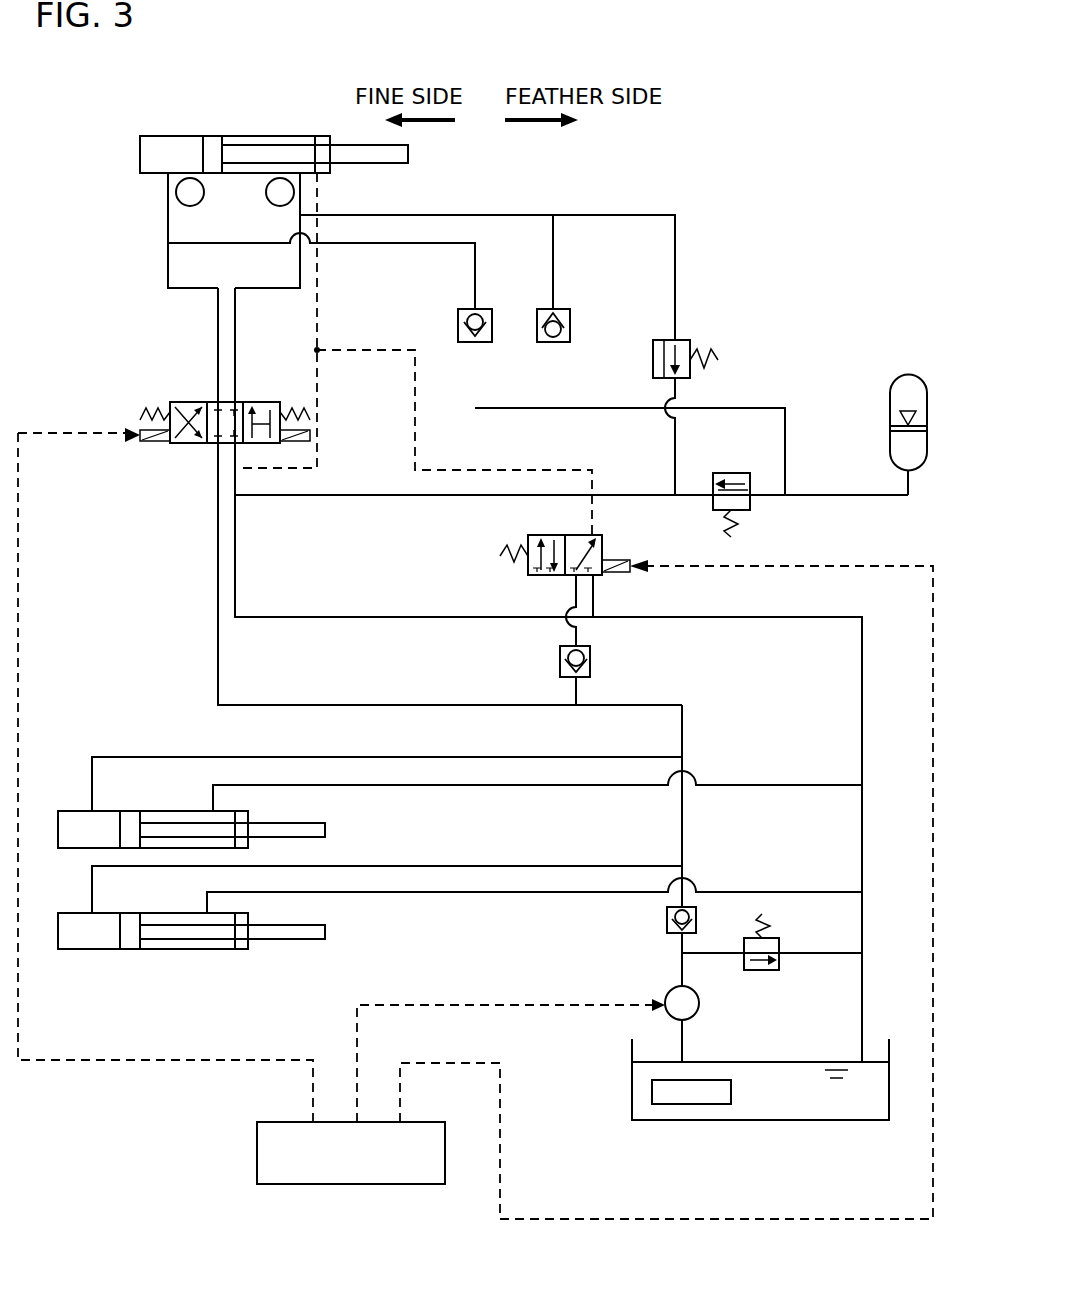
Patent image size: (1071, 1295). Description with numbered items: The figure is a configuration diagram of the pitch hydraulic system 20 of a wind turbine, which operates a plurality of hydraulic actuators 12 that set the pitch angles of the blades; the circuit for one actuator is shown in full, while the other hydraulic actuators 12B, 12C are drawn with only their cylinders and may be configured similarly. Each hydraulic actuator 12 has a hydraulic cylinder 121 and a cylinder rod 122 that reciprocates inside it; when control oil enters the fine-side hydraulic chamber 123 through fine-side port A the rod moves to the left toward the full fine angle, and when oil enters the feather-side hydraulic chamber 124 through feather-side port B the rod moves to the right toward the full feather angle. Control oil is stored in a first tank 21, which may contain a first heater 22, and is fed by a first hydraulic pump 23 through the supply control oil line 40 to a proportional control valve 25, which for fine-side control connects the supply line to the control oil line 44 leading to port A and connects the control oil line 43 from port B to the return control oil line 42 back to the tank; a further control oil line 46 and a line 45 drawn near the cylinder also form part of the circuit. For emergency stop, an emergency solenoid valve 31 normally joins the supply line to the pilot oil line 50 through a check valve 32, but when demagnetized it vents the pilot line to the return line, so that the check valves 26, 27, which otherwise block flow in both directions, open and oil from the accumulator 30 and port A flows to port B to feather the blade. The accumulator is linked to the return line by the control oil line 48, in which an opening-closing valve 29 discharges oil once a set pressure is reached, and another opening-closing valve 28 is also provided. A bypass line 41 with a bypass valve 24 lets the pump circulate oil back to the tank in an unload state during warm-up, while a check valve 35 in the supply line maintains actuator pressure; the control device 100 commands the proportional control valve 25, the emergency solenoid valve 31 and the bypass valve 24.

The pitch hydraulic system 20 is at (681, 154).
The hydraulic actuator 12 is at (262, 134).
The hydraulic cylinder 121 is at (139, 155).
The cylinder rod 122 is at (214, 135).
The fine-side hydraulic chamber 123 is at (304, 135).
The feather-side hydraulic chamber 124 is at (160, 135).
The hydraulic actuator 12B is at (68, 810).
The hydraulic actuator 12C is at (68, 912).
The first tank 21 is at (631, 1084).
The first heater 22 is at (699, 1105).
The first hydraulic pump 23 is at (664, 1000).
The bypass valve 24 is at (762, 971).
The proportional control valve 25 is at (169, 408).
The check valve 26 is at (490, 308).
The check valve 27 is at (566, 308).
The opening-closing valve 28 is at (690, 346).
The opening-closing valve 29 is at (757, 508).
The accumulator 30 is at (908, 374).
The emergency solenoid valve 31 is at (604, 546).
The check valve 32 is at (592, 660).
The check valve 35 is at (666, 921).
The control oil line 40 is at (680, 965).
The bypass line 41 is at (815, 954).
The control oil line 42 is at (864, 972).
The control oil line 43 is at (217, 338).
The control oil line 44 is at (236, 338).
The pipe line 45 is at (400, 244).
The control oil line 46 is at (500, 214).
The control oil line 48 is at (415, 497).
The pilot oil line 50 is at (500, 469).
The control device 100 is at (329, 1185).